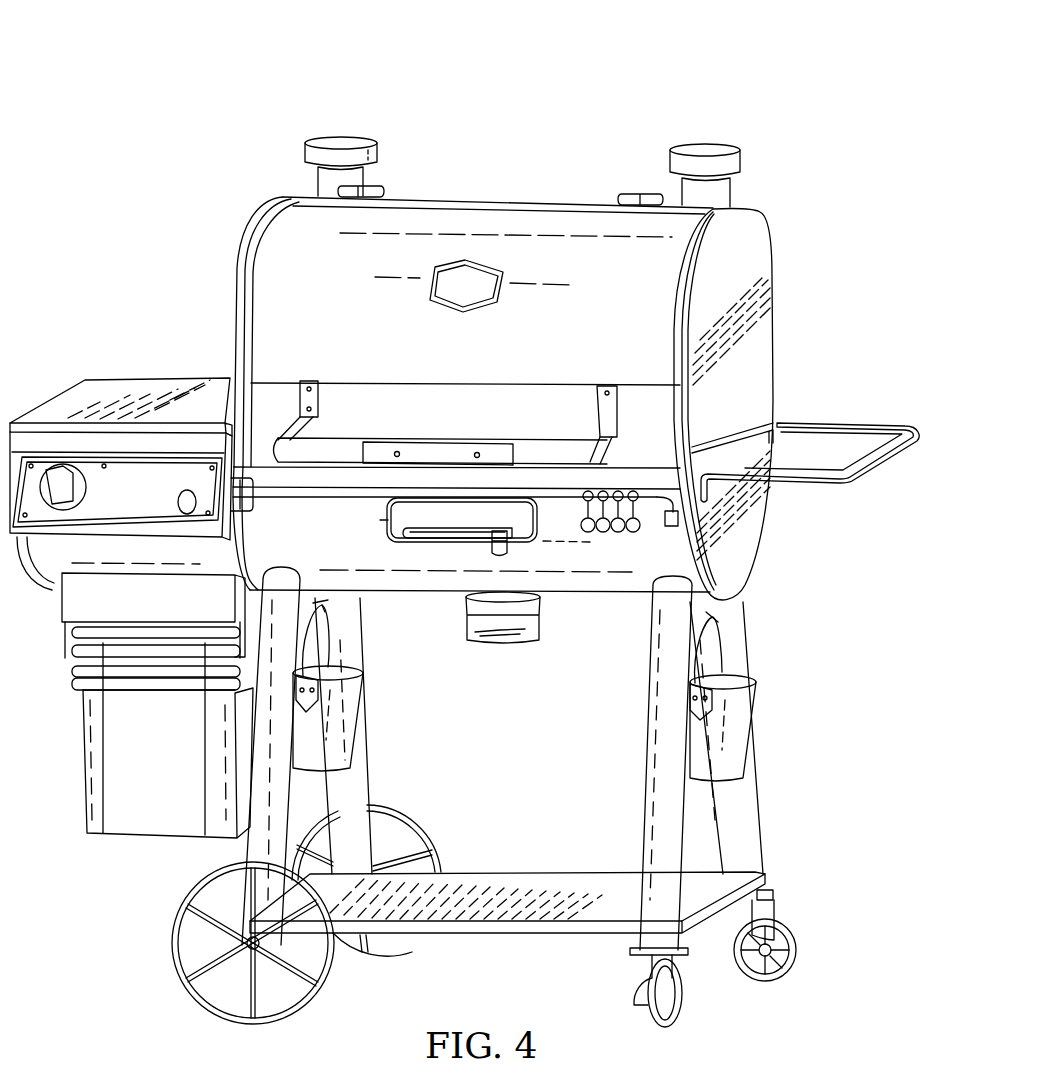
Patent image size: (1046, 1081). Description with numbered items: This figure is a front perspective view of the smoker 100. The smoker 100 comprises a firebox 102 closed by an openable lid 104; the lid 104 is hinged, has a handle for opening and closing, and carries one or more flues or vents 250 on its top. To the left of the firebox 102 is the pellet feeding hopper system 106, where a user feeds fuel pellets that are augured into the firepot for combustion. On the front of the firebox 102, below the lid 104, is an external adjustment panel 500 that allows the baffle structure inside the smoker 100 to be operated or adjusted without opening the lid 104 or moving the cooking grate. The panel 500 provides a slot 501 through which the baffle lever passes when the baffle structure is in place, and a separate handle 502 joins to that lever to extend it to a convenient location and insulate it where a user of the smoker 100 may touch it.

The smoker 100 is at (146, 110).
The firebox 102 is at (766, 550).
The lid 104 is at (773, 263).
The pellet feeding hopper system 106 is at (44, 590).
The flues or vents 250 is at (351, 135).
The external adjustment panel 500 is at (388, 526).
The slot 501 is at (437, 545).
The handle 502 is at (512, 550).